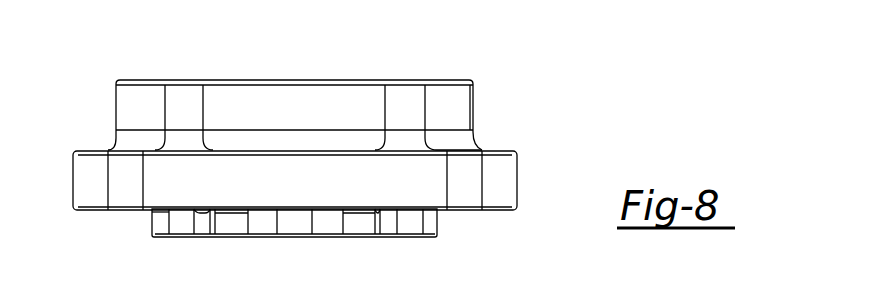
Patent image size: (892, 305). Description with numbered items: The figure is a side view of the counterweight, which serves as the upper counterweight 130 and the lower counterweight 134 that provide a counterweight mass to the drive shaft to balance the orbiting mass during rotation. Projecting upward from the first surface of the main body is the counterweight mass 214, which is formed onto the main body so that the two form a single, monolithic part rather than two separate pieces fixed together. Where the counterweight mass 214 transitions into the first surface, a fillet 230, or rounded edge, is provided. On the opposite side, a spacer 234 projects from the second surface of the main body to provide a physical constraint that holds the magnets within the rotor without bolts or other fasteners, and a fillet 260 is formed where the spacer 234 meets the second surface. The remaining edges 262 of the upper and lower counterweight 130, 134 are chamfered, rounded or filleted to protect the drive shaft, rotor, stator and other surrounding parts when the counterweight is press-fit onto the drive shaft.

The upper counterweight 130 is at (458, 61).
The lower counterweight 134 is at (310, 150).
The counterweight mass 214 is at (259, 74).
The fillet 230 is at (447, 138).
The fillet 260 is at (142, 212).
The remaining edges 262 is at (77, 150).
The spacer 234 is at (181, 252).